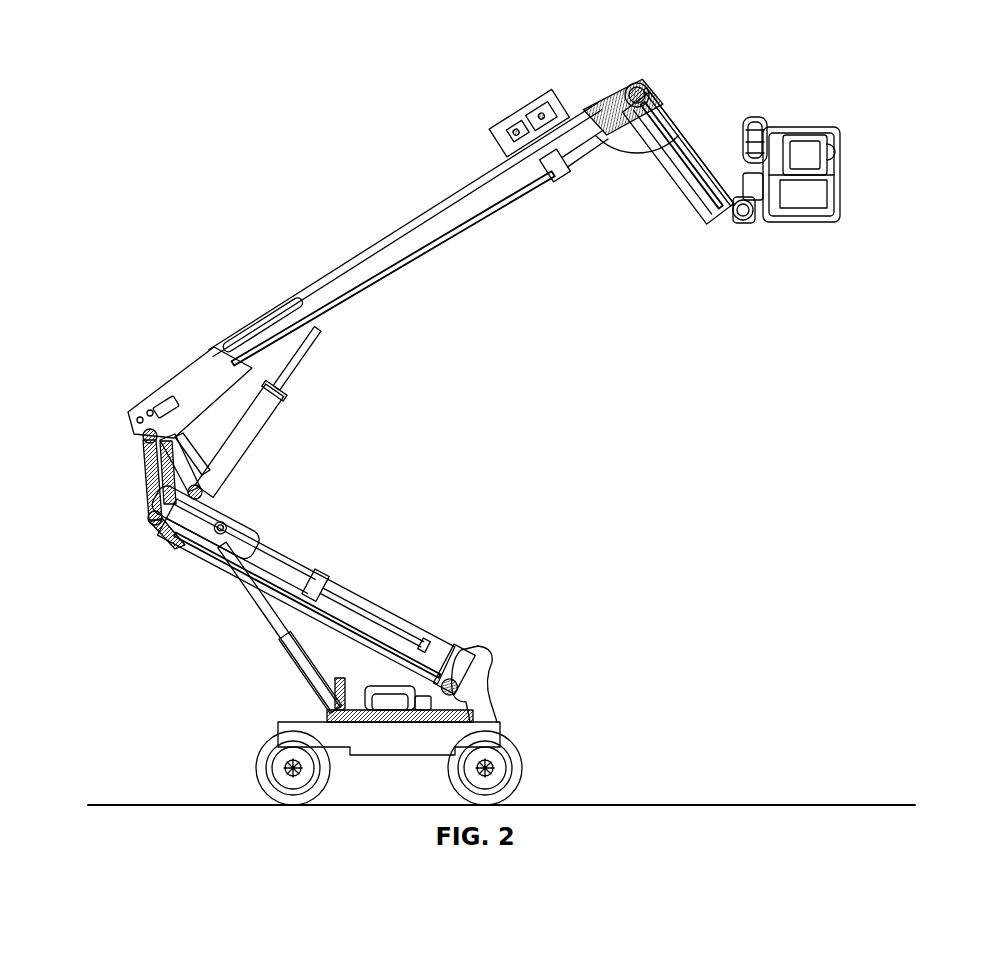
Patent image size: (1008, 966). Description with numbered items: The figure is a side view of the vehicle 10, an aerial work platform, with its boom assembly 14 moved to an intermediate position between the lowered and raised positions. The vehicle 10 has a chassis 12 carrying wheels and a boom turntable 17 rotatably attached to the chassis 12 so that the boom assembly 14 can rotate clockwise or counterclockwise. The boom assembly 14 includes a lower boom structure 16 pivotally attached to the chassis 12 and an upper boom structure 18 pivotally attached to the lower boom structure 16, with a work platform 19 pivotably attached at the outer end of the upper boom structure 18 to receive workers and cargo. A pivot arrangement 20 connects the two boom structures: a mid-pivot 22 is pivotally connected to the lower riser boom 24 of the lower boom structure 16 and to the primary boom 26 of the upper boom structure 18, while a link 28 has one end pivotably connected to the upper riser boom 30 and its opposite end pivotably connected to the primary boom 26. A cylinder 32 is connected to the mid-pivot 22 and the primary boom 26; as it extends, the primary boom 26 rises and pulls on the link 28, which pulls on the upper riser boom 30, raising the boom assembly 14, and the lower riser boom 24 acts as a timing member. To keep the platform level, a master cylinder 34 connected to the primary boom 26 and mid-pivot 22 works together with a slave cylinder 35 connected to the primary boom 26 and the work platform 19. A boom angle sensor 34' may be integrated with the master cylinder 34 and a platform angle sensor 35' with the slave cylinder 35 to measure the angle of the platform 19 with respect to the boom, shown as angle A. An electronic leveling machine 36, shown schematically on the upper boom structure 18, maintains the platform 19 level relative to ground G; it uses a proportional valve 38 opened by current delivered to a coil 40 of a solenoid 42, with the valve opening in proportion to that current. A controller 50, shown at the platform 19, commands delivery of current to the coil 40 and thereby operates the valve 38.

The vehicle 10 is at (487, 414).
The chassis 12 is at (480, 722).
The boom assembly 14 is at (150, 341).
The lower boom structure 16 is at (398, 576).
The boom turntable 17 is at (387, 722).
The upper boom structure 18 is at (516, 236).
The work platform 19 is at (800, 103).
The pivot arrangement 20 is at (268, 465).
The mid-pivot 22 is at (152, 530).
The lower riser boom 24 is at (355, 657).
The primary boom 26 is at (578, 147).
The link 28 is at (185, 448).
The upper riser boom 30 is at (293, 553).
The cylinder 32 is at (262, 437).
The master cylinder 34 is at (119, 480).
The boom angle sensor 34' is at (118, 499).
The slave cylinder 35 is at (677, 158).
The platform angle sensor 35' is at (702, 119).
The electronic leveling machine 36 is at (583, 100).
The proportional valve 38 is at (550, 97).
The coil 40 is at (518, 128).
The solenoid 42 is at (475, 99).
The controller 50 is at (817, 182).
The boom angle A is at (670, 150).
The ground G is at (501, 794).